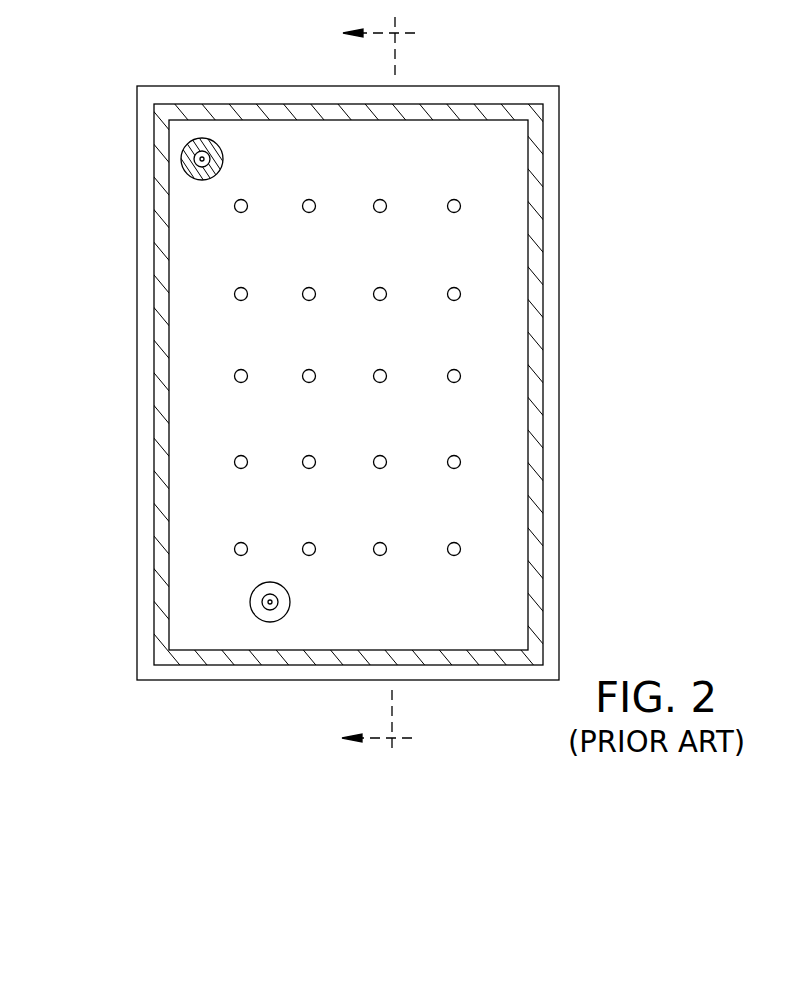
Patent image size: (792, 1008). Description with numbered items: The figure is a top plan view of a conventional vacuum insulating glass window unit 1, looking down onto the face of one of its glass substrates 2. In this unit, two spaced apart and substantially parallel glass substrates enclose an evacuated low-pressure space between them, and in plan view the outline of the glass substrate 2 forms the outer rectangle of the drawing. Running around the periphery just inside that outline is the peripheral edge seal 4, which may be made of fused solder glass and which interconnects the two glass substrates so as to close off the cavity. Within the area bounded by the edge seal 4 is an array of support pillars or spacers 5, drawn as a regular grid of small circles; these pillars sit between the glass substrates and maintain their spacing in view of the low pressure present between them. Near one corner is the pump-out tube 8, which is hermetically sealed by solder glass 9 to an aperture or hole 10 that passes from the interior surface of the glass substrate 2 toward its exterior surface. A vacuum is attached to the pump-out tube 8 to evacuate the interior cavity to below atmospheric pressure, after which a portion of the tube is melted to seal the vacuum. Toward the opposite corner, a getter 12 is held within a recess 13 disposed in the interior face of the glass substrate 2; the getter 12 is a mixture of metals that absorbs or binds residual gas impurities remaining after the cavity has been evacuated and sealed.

The VIG window unit 1 is at (396, 397).
The glass substrate 2 is at (343, 95).
The peripheral edge seal 4 is at (267, 112).
The support pillars/spacers 5 is at (461, 294).
The pump-out tube 8 is at (196, 153).
The solder glass 9 is at (201, 181).
The aperture/hole 10 is at (187, 170).
The getter 12 is at (263, 607).
The recess 13 is at (278, 602).